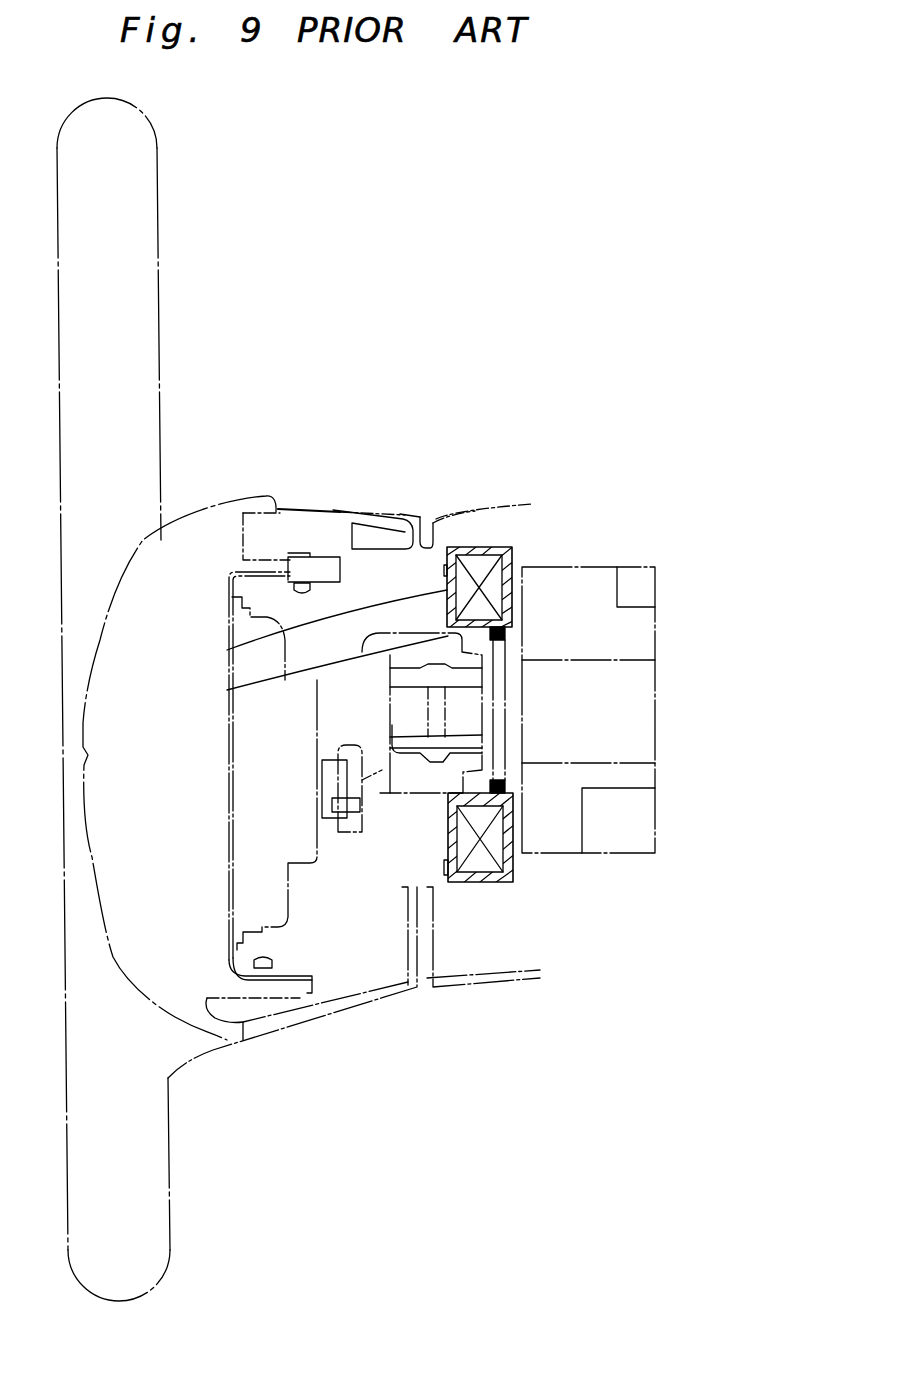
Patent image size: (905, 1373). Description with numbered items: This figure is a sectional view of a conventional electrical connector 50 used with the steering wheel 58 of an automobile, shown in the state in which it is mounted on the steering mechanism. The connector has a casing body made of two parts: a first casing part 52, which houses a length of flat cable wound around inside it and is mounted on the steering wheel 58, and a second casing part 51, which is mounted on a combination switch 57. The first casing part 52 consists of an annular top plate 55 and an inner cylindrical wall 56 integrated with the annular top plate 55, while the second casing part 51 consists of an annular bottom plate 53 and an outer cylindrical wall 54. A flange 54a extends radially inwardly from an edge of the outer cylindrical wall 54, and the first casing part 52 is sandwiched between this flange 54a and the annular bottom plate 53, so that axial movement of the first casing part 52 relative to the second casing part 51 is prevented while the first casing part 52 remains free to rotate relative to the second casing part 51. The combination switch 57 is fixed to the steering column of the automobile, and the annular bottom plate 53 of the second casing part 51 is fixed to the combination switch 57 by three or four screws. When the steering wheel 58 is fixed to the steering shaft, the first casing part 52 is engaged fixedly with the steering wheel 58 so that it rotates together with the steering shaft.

The electrical connector 50 is at (486, 893).
The second casing part 51 is at (459, 511).
The first casing part 52 is at (180, 632).
The annular bottom plate 53 is at (510, 555).
The outer cylindrical wall 54 is at (473, 550).
The flange 54a is at (436, 495).
The annular top plate 55 is at (230, 649).
The inner cylindrical wall 56 is at (230, 689).
The combination switch 57 is at (613, 855).
The steering wheel 58 is at (170, 423).